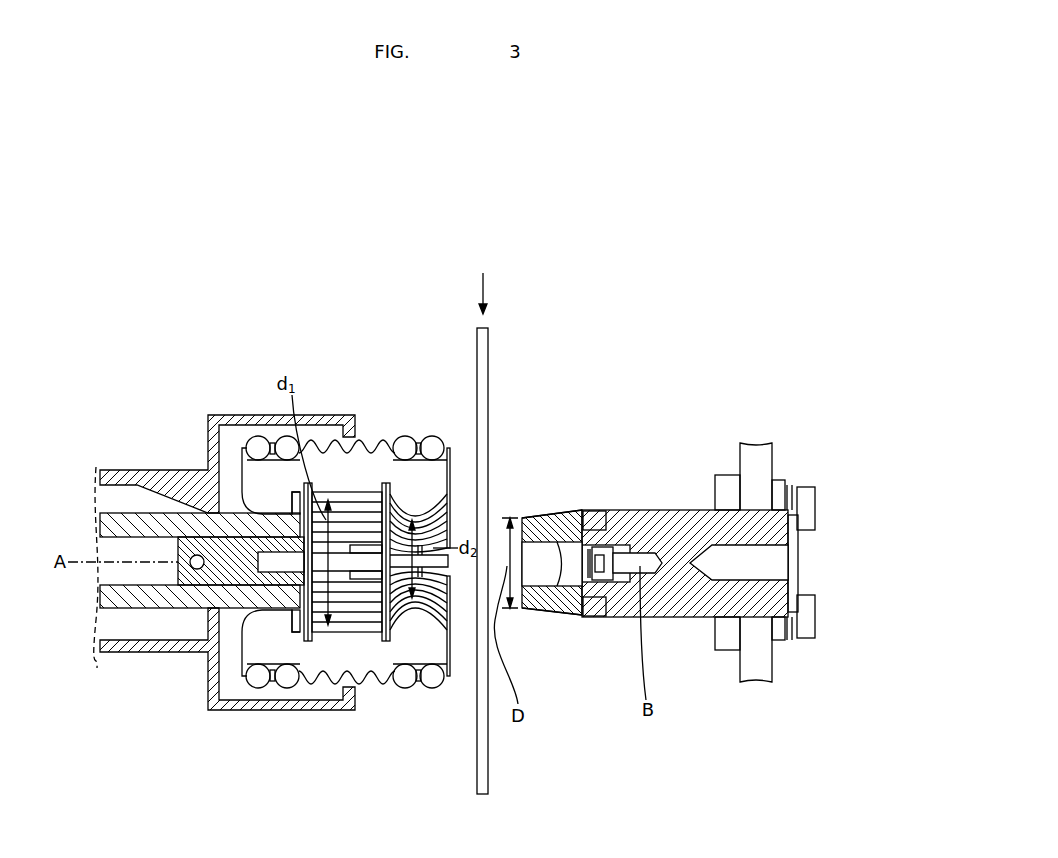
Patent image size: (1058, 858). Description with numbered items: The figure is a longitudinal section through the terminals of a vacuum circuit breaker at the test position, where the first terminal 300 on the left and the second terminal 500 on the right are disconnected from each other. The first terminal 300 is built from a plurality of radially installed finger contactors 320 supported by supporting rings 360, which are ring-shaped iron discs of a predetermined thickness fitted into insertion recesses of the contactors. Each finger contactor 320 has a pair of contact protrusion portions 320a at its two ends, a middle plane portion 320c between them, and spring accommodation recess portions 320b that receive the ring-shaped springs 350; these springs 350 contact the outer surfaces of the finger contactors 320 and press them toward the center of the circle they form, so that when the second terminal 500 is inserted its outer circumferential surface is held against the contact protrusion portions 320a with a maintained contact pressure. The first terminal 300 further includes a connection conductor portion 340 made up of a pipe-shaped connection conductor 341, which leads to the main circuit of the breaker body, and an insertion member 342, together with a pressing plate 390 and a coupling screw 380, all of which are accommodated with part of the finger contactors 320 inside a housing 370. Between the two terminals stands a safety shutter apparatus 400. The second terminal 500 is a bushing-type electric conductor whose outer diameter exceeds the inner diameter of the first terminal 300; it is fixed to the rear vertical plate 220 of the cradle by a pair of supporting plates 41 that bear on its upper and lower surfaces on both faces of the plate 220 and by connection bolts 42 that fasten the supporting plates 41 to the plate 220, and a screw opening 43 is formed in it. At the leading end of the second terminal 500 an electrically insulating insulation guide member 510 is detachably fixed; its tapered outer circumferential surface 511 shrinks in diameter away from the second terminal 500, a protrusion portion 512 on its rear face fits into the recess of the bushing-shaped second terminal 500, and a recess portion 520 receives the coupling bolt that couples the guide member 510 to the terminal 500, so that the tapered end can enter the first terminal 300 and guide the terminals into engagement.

The first terminal 300 is at (248, 406).
The connection conductor portion 340 is at (199, 627).
The connection conductor 341 is at (121, 604).
The insertion member 342 is at (195, 578).
The housing 370 is at (228, 713).
The supporting rings 360 is at (297, 633).
The ring-shaped springs 350 is at (404, 436).
The coupling screw 380 is at (282, 600).
The pressing plate 390 is at (301, 622).
The finger contactors 320 is at (375, 648).
The contact protrusion portions 320a is at (430, 495).
The spring accommodation recess portions 320b is at (380, 440).
The middle plane portion 320c is at (343, 490).
The safety shutter apparatus 400 is at (486, 346).
The second terminal 500 is at (768, 535).
The insulation guide member 510 is at (566, 510).
The tapered outer circumferential surface 511 is at (540, 503).
The protrusion portion 512 is at (605, 510).
The recess portion 520 is at (590, 583).
The rear vertical plate 220 is at (766, 463).
The screw opening 43 is at (768, 563).
The connection bolts 42 is at (803, 623).
The supporting plates 41 is at (725, 644).